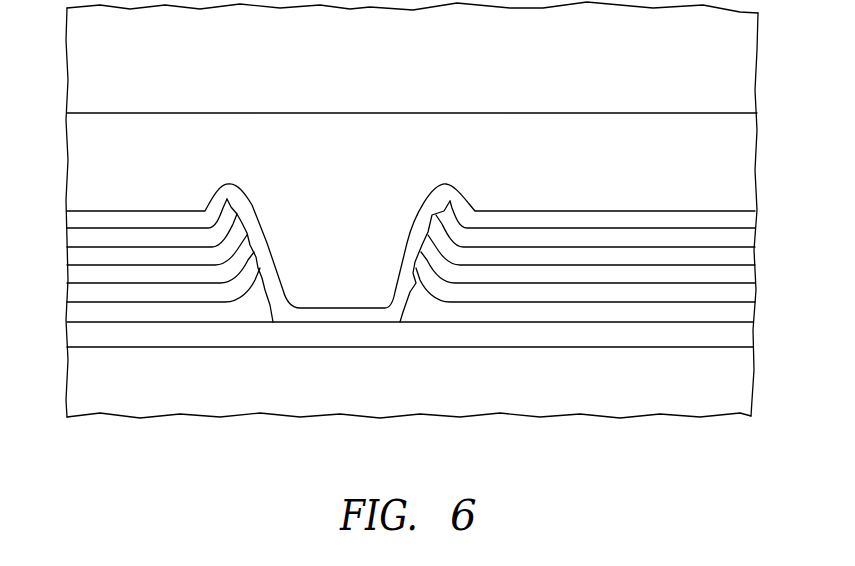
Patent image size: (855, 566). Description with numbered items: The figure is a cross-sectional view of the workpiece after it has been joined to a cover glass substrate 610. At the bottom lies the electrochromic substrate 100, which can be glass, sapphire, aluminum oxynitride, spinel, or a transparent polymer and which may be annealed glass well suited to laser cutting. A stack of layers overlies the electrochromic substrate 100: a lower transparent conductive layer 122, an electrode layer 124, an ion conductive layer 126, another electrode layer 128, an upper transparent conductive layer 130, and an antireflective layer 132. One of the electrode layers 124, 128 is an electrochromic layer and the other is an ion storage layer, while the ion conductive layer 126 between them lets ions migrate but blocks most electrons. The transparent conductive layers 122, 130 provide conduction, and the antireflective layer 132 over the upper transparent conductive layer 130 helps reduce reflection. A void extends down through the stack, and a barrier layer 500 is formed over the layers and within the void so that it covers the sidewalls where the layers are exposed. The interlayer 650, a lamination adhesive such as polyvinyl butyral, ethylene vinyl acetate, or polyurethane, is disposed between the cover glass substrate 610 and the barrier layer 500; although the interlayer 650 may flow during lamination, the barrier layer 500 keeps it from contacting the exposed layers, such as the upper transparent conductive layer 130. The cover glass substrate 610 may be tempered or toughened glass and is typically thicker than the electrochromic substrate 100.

The cover glass substrate 610 is at (432, 81).
The interlayer 650 is at (340, 169).
The barrier layer 500 is at (410, 252).
The electrode layer 128 is at (531, 275).
The upper transparent conductive layer 130 is at (613, 258).
The antireflective layer 132 is at (686, 237).
The transparent conductive layer 122 is at (103, 335).
The electrode layer 124 is at (177, 315).
The ion conductive layer 126 is at (232, 295).
The electrochromic substrate 100 is at (723, 400).